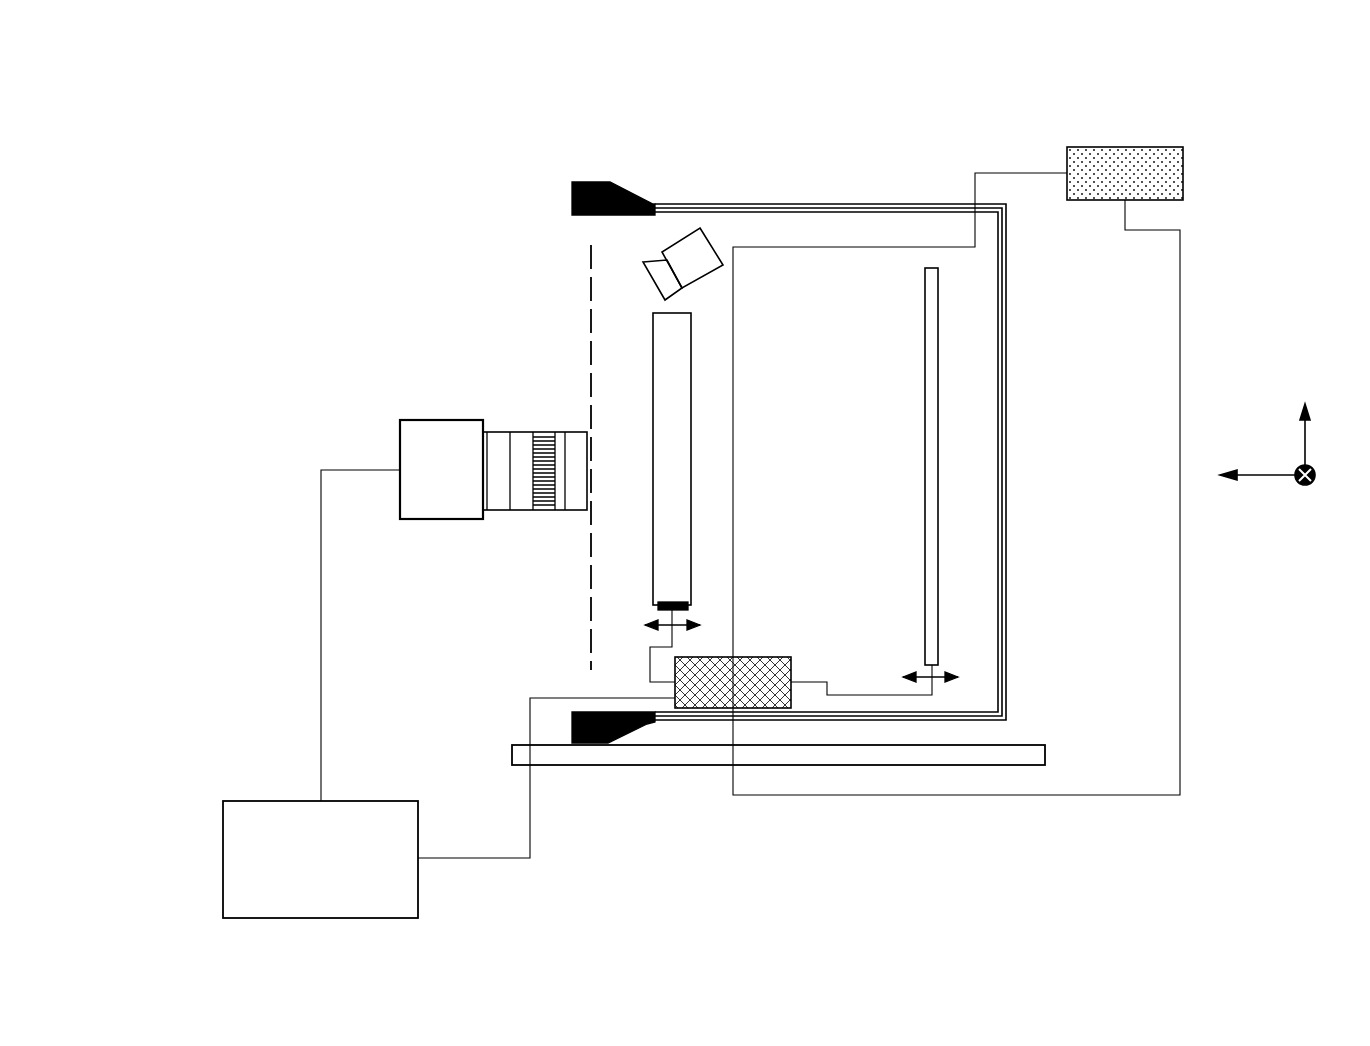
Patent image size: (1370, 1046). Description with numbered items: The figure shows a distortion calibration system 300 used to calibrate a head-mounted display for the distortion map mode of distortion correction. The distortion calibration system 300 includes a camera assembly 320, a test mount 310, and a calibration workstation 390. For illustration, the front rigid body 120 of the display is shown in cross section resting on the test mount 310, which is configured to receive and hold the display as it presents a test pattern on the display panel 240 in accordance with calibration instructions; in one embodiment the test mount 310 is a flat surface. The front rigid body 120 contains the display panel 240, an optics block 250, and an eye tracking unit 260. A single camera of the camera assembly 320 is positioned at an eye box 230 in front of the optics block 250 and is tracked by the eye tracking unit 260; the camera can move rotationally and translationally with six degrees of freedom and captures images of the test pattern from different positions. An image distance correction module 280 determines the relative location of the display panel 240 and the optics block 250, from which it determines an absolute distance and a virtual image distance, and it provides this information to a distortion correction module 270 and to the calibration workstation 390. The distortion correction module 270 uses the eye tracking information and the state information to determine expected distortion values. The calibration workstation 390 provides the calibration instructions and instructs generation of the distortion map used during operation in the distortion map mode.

The distortion calibration system 300 is at (171, 153).
The front rigid body 120 is at (940, 204).
The eye tracking unit 260 is at (680, 235).
The optics block 250 is at (653, 328).
The display panel 240 is at (937, 387).
The distortion correction module 270 is at (1125, 147).
The image distance correction module 280 is at (703, 708).
The camera assembly 320 is at (465, 420).
The eye box 230 is at (572, 531).
The test mount 310 is at (1000, 748).
The calibration workstation 390 is at (402, 883).